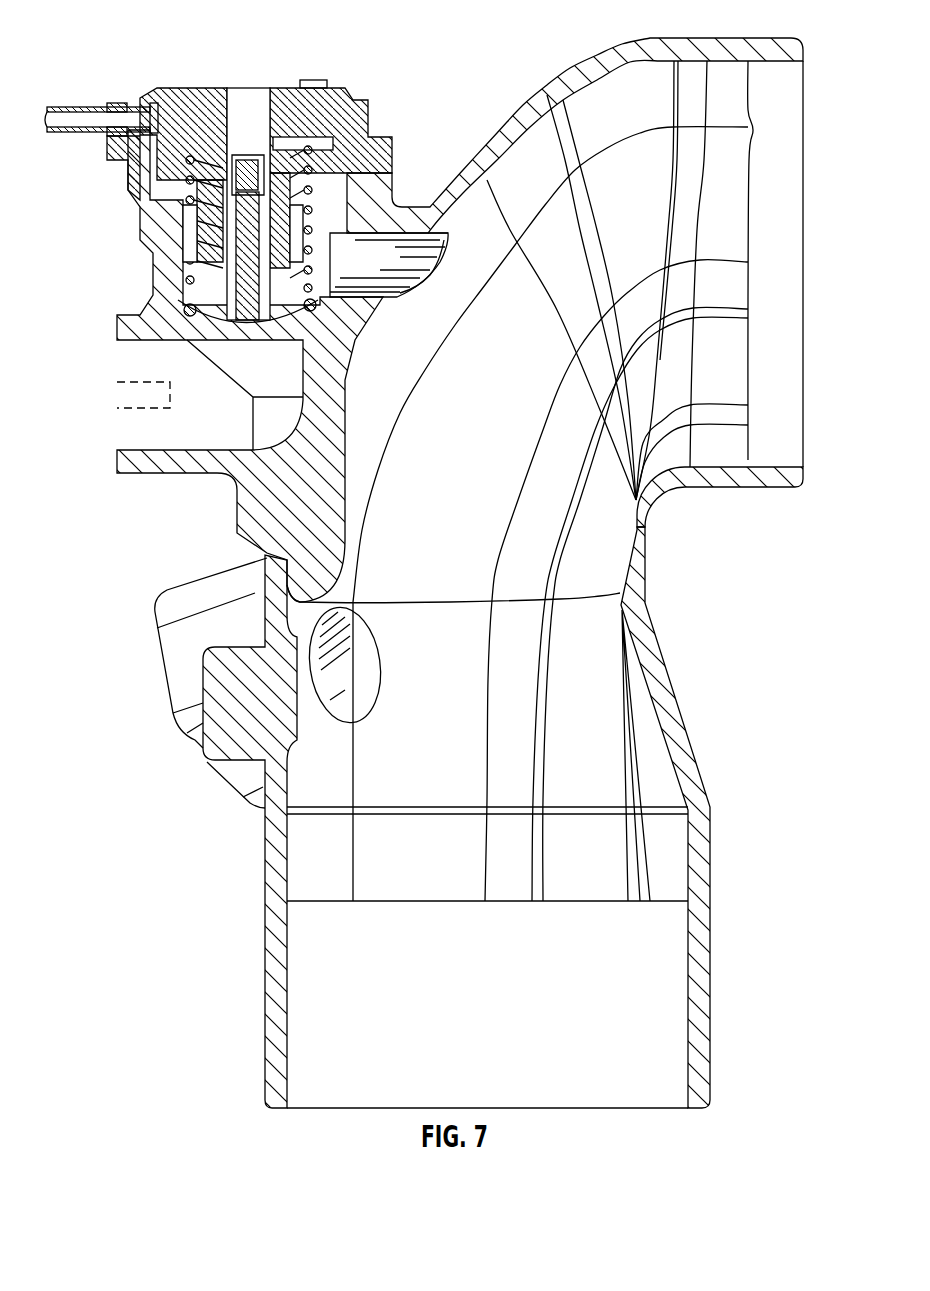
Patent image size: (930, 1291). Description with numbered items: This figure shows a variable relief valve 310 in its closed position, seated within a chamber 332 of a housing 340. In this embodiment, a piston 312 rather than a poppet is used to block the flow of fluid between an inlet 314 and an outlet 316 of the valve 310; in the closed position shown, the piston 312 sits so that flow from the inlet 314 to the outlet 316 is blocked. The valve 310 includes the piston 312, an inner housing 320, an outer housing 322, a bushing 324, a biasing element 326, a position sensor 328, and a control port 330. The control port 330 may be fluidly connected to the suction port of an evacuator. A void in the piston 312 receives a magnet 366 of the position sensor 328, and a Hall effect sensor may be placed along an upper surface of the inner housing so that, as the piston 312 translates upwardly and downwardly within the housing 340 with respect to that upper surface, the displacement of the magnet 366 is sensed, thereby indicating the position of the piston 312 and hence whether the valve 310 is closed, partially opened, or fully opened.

The variable relief valve 310 is at (390, 28).
The piston 312 is at (220, 268).
The inlet 314 is at (240, 353).
The outlet 316 is at (383, 258).
The inner housing 320 is at (347, 110).
The outer housing 322 is at (283, 97).
The bushing 324 is at (215, 222).
The biasing element 326 is at (340, 170).
The position sensor 328 is at (332, 70).
The control port 330 is at (140, 107).
The chamber 332 is at (128, 160).
The housing 340 is at (655, 47).
The magnet 366 is at (246, 165).